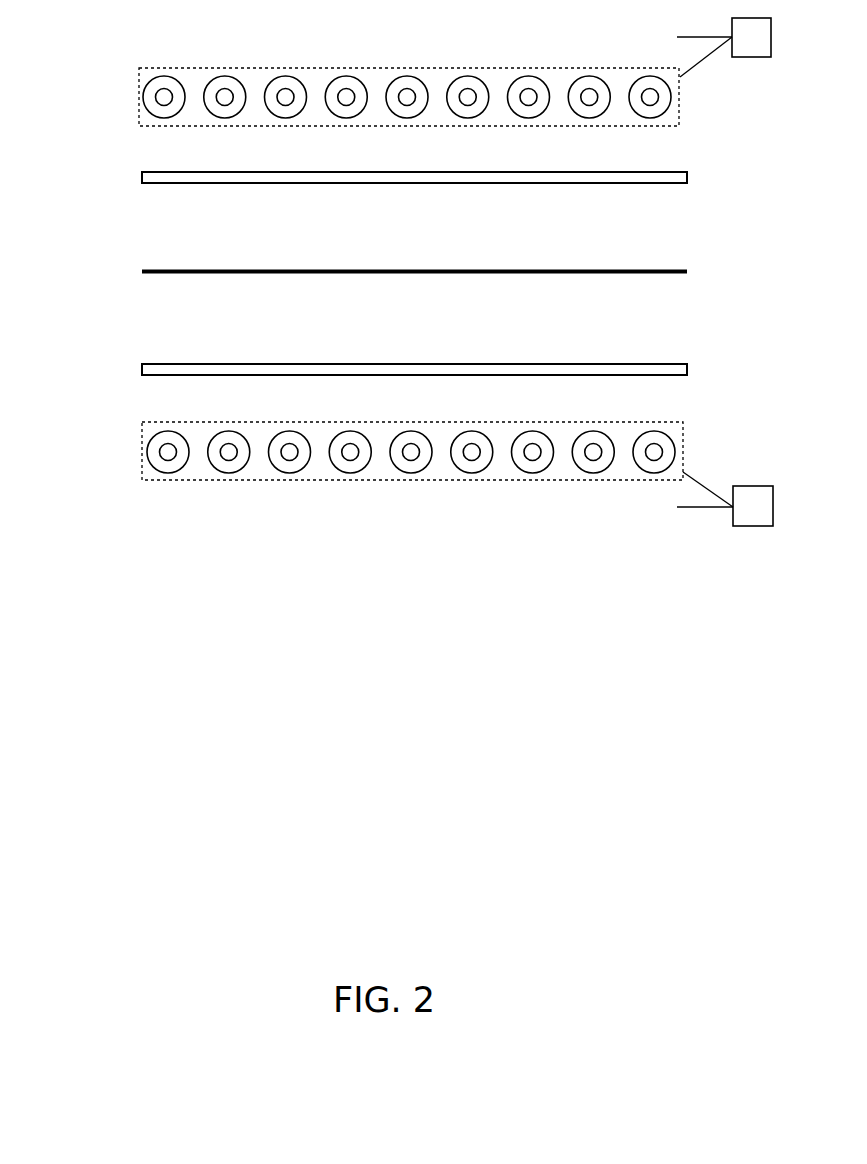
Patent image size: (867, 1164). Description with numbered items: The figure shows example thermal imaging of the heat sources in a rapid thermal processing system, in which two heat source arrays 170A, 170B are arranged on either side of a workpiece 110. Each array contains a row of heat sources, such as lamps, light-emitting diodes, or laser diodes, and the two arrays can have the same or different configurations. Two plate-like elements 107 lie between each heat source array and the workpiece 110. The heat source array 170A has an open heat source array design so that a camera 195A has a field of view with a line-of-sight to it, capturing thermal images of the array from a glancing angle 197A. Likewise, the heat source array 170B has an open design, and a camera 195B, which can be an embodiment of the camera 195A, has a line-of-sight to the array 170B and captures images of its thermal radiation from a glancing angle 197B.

The heat source array 170A is at (139, 97).
The heat source array 170B is at (142, 450).
The light guide / diffuser plate 107 is at (142, 177).
The workpiece 110 is at (142, 271).
The camera 195A is at (759, 57).
The camera 195B is at (758, 526).
The glancing angle 197A is at (693, 46).
The glancing angle 197B is at (697, 497).